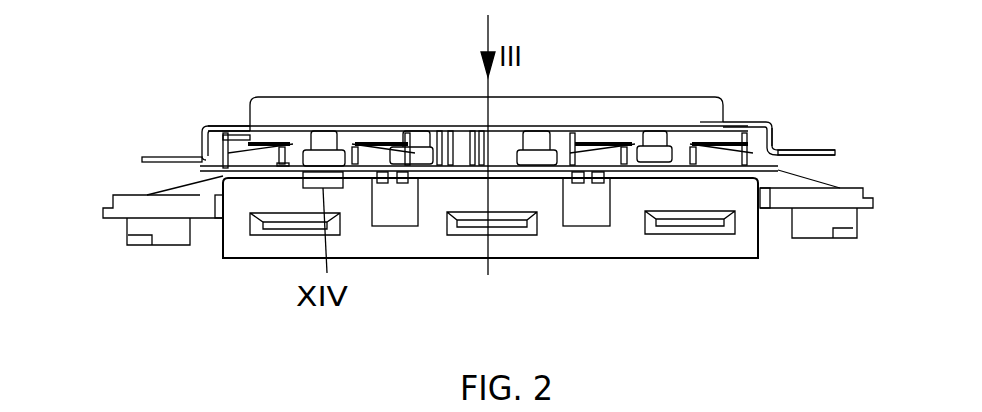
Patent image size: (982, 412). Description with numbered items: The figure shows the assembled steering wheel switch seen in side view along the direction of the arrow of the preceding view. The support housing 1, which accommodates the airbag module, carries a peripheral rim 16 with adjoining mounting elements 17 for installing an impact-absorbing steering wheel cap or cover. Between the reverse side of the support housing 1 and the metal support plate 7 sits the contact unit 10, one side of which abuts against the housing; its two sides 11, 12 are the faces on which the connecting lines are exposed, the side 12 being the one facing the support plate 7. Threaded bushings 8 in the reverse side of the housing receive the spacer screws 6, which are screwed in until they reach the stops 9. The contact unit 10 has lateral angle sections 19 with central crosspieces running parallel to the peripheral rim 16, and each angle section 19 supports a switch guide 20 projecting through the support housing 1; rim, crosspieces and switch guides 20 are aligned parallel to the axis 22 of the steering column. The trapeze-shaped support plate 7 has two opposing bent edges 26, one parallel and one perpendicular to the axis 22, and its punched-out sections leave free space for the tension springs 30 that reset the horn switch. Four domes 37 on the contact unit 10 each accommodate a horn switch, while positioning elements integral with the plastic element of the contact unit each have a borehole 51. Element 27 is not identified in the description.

The support housing 1 is at (218, 265).
The spacer screws 6 is at (317, 138).
The support plate 7 is at (735, 122).
The threaded bushings 8 is at (546, 152).
The stops 9 is at (426, 130).
The contact unit 10 is at (629, 172).
The side of contact unit 11 is at (672, 172).
The side of contact unit facing support plate 12 is at (681, 153).
The peripheral rim 16 is at (745, 247).
The mounting elements 17 is at (290, 228).
The angle sections 19 is at (136, 170).
The switch guides 20 is at (162, 236).
The axis of the steering column 22 is at (485, 267).
The bent edges 26 is at (774, 130).
The bracket foot 27 is at (808, 150).
The tension springs 30 is at (233, 148).
The domes 37 is at (247, 140).
The borehole 51 is at (228, 152).